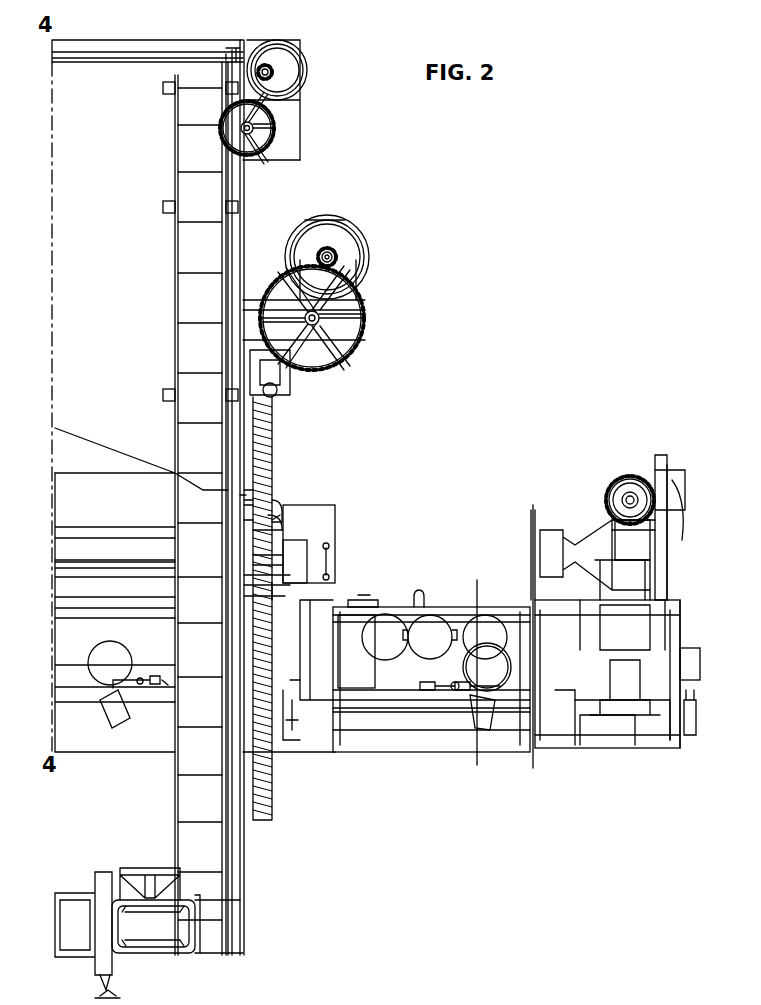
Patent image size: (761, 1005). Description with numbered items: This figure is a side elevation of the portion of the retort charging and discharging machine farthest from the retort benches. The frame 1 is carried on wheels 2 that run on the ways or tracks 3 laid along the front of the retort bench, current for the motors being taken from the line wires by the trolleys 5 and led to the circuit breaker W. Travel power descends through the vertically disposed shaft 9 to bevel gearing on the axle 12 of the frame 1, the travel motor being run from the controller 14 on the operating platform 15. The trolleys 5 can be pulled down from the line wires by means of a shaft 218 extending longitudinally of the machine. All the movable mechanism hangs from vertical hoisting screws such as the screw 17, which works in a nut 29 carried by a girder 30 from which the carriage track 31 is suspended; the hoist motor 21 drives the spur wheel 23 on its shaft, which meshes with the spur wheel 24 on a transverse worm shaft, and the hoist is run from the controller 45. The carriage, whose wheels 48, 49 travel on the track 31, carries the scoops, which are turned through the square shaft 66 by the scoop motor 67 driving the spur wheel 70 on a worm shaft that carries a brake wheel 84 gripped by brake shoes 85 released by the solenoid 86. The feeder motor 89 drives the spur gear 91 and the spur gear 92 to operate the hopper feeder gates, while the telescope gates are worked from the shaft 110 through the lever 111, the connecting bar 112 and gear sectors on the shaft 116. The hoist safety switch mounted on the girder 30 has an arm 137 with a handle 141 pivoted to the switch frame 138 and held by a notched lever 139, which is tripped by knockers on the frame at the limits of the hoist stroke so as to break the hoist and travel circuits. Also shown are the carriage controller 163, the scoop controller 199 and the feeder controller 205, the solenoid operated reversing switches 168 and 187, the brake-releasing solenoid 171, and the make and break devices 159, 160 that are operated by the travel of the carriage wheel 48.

The frame 1 is at (244, 855).
The wheels 2 is at (93, 973).
The ways or tracks 3 is at (113, 990).
The trolleys 5 is at (539, 628).
The vertically disposed shaft 9 is at (476, 670).
The axle 12 is at (177, 910).
The controller (travel) 14 is at (376, 678).
The operating platform 15 is at (417, 751).
The screw 17 is at (273, 437).
The motor (hoist) 21 is at (367, 233).
The spur wheel 23 is at (340, 257).
The spur wheel 24 is at (370, 324).
The nut 29 is at (285, 538).
The girder 30 is at (291, 575).
The carriage track 31 is at (405, 720).
The controller (hoist) 45 is at (371, 651).
The wheel 48 is at (487, 667).
The wheel 49 is at (692, 719).
The square shaft 66 is at (419, 603).
The motor (scoop) 67 is at (688, 497).
The spur wheel 70 is at (607, 492).
The brake wheel 84 is at (614, 500).
The brake shoes 85 is at (608, 518).
The solenoid 86 is at (676, 470).
The motor (feeder) 89 is at (283, 44).
The spur gear 91 is at (276, 71).
The spur gear 92 is at (302, 132).
The shaft 110 is at (412, 712).
The lever 111 is at (300, 690).
The connecting bar 112 is at (306, 625).
The shaft 116 is at (92, 562).
The arm 137 is at (279, 504).
The switch frame 138 is at (284, 522).
The notched lever 139 is at (238, 513).
The handle 141 is at (272, 492).
The make and break device 159 is at (468, 718).
The make and break device 160 is at (108, 728).
The controller (carriage manual) 163 is at (386, 621).
The solenoid operated reversing switch 168 is at (607, 725).
The solenoid 171 is at (701, 664).
The solenoid operated reversing switch 187 is at (607, 634).
The controller (scoop manual) 199 is at (430, 637).
The controller (feeder manual) 205 is at (485, 637).
The shaft 218 is at (160, 63).
The circuit breaker W is at (337, 522).